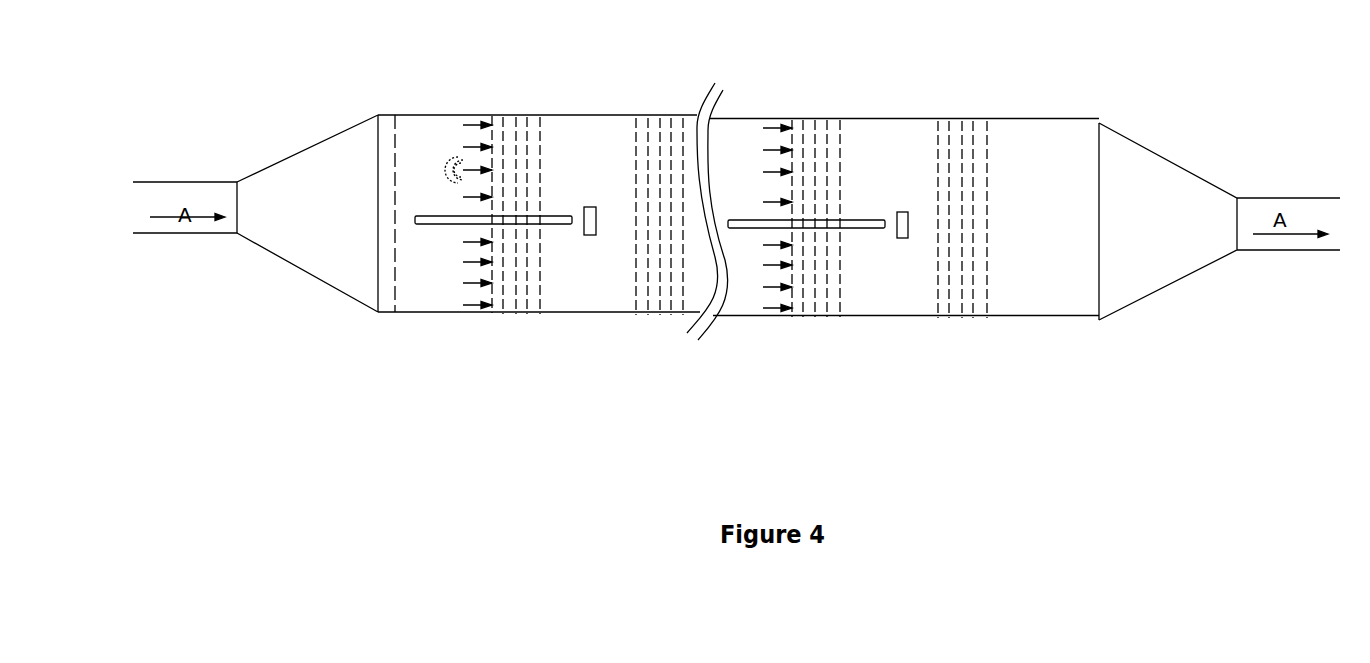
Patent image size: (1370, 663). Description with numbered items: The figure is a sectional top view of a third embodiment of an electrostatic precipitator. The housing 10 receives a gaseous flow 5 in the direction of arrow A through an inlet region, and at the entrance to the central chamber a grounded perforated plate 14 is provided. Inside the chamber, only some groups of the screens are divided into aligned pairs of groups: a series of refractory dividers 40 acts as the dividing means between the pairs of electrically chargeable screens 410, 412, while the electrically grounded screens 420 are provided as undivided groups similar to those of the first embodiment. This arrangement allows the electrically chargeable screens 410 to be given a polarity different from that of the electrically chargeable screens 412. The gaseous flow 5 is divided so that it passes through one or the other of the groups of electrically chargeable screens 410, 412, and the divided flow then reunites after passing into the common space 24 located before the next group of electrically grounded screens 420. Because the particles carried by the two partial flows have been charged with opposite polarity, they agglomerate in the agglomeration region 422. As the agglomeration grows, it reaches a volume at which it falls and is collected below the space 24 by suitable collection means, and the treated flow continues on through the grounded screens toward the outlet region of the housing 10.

The gaseous flow 5 is at (172, 207).
The housing 10 is at (378, 104).
The grounded perforated plate 14 is at (392, 297).
The space 24 is at (592, 142).
The refractory divider 40 is at (560, 224).
The electrically chargeable screens 410 is at (503, 135).
The electrically chargeable screens 412 is at (513, 290).
The electrically grounded screens 420 is at (648, 135).
The agglomeration region 422 is at (590, 228).